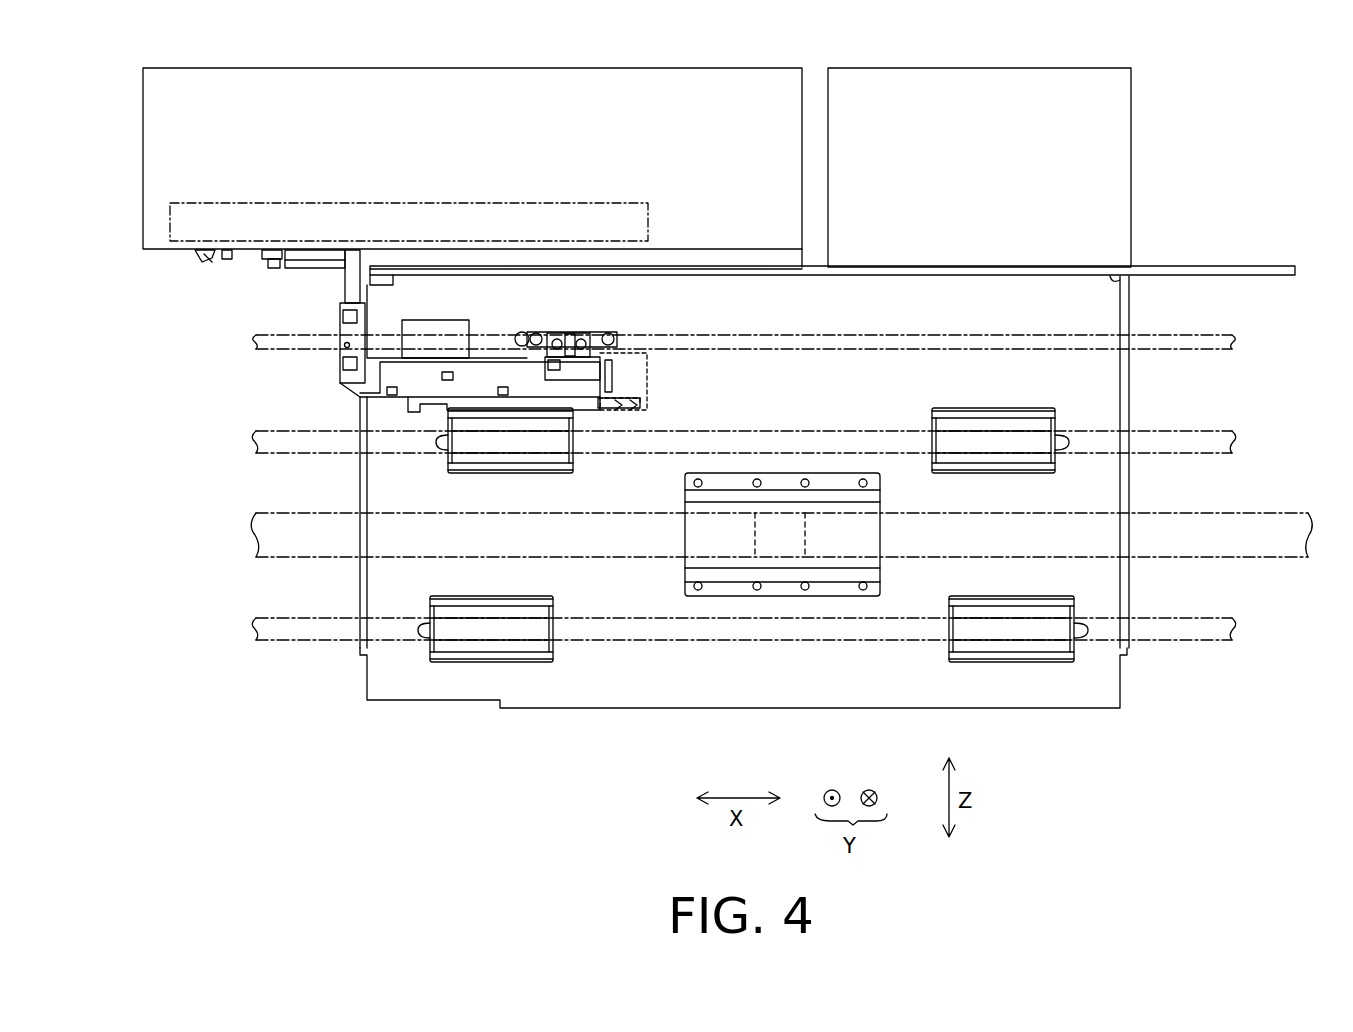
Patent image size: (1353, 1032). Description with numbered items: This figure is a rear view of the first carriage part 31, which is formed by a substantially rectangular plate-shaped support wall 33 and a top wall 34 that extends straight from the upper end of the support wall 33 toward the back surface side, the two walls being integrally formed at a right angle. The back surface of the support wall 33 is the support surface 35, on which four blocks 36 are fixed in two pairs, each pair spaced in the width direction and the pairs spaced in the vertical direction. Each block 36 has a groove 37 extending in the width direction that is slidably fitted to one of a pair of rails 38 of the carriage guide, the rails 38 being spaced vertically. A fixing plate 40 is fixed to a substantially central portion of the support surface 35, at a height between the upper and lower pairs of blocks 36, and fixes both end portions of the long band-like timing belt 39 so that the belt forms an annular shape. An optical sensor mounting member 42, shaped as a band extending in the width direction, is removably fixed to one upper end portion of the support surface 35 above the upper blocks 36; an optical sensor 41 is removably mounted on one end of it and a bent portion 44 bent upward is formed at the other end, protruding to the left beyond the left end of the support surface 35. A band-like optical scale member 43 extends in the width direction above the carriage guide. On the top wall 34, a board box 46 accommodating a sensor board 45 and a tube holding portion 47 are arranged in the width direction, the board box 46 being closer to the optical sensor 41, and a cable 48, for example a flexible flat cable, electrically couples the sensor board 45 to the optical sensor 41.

The first carriage part 31 is at (1122, 676).
The support wall 33 is at (1130, 572).
The top wall 34 is at (1259, 277).
The support surface 35 is at (366, 470).
The blocks 36 is at (1055, 410).
The groove 37 is at (520, 456).
The rails 38 is at (1238, 431).
The timing belt 39 is at (1243, 515).
The fixing plate 40 is at (685, 573).
The optical sensor 41 is at (576, 333).
The optical sensor mounting member 42 is at (348, 394).
The optical scale member 43 is at (1238, 350).
The bent portion 44 is at (340, 323).
The sensor board 45 is at (362, 202).
The board box 46 is at (596, 67).
The tube holding portion 47 is at (1067, 72).
The cable 48 is at (345, 283).